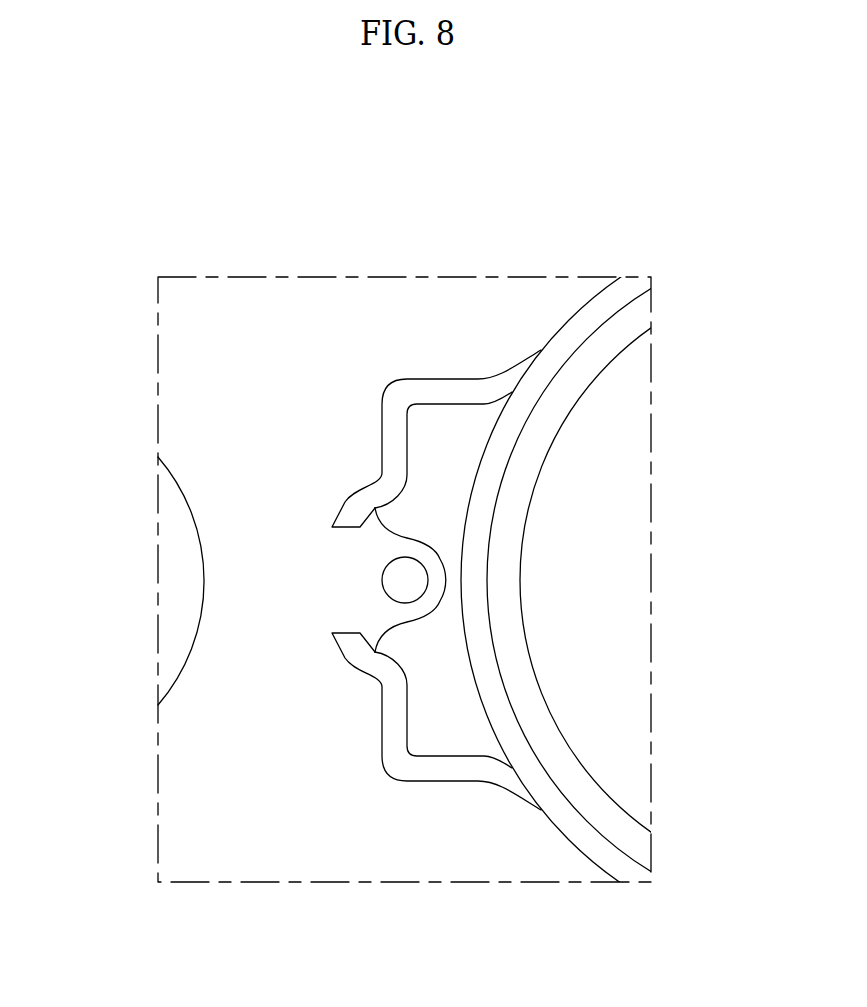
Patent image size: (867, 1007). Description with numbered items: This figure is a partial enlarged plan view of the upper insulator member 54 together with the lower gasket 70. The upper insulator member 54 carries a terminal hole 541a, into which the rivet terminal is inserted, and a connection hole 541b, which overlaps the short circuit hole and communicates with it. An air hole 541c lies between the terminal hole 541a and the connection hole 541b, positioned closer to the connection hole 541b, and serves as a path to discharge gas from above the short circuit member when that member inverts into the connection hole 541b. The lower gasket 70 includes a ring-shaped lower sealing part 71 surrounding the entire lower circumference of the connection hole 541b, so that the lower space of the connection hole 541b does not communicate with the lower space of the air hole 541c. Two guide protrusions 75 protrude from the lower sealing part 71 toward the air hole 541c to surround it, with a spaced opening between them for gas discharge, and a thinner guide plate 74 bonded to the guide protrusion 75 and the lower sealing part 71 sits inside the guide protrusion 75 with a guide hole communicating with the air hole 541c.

The upper insulator member 54 is at (247, 315).
The terminal hole 541a is at (173, 477).
The connection hole 541b is at (553, 433).
The air hole 541c is at (382, 580).
The lower gasket 70 is at (436, 600).
The lower sealing part 71 is at (582, 833).
The guide plate 74 is at (446, 715).
The guide protrusion 75 is at (470, 767).